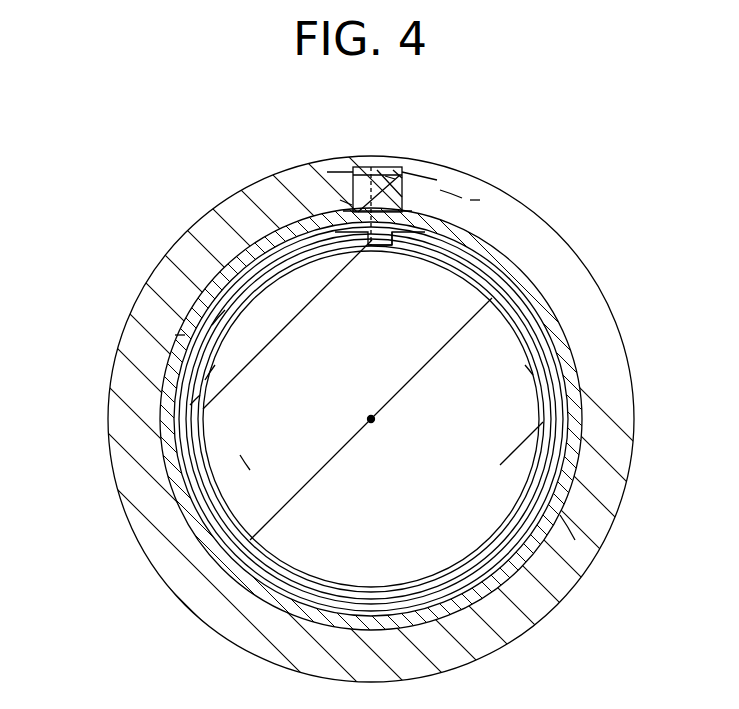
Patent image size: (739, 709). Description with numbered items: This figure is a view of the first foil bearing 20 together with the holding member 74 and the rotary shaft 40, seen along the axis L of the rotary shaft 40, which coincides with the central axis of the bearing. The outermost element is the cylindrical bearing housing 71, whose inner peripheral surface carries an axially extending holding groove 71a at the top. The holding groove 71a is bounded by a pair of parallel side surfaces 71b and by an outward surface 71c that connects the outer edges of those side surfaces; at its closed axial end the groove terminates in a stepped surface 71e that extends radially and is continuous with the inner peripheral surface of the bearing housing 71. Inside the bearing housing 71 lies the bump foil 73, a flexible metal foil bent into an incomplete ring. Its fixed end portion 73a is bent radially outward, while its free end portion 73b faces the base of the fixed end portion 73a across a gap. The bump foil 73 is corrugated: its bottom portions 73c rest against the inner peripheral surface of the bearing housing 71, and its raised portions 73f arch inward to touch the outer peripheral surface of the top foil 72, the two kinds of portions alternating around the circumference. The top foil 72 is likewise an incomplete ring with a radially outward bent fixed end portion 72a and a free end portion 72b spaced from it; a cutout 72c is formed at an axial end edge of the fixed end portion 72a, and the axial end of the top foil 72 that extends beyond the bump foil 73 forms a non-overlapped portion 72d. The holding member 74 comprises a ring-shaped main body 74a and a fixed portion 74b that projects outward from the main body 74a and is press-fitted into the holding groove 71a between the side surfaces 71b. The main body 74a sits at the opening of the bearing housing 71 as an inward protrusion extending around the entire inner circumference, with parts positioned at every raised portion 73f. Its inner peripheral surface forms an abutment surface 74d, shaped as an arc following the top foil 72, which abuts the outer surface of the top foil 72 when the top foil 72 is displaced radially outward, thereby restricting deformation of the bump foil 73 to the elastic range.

The first foil bearing 20 is at (187, 203).
The rotary shaft 40 is at (570, 527).
The bearing housing 71 is at (558, 240).
The holding groove 71a is at (462, 198).
The side surfaces 71b is at (327, 172).
The outward surface 71c is at (362, 175).
The stepped surface 71e is at (397, 172).
The top foil 72 is at (210, 285).
The fixed end portion 72a is at (315, 200).
The free end portion 72b is at (402, 250).
The cutout 72c is at (375, 248).
The non-overlapped portion 72d is at (185, 335).
The bump foil 73 is at (190, 440).
The fixed end portion 73a is at (350, 203).
The free end portion 73b is at (477, 197).
The bottom portions 73c is at (208, 453).
The raised portions 73f is at (533, 368).
The holding member 74 is at (200, 355).
The main body 74a is at (190, 405).
The fixed portion 74b is at (395, 179).
The abutment surface 74d is at (212, 325).
The axis L is at (373, 422).